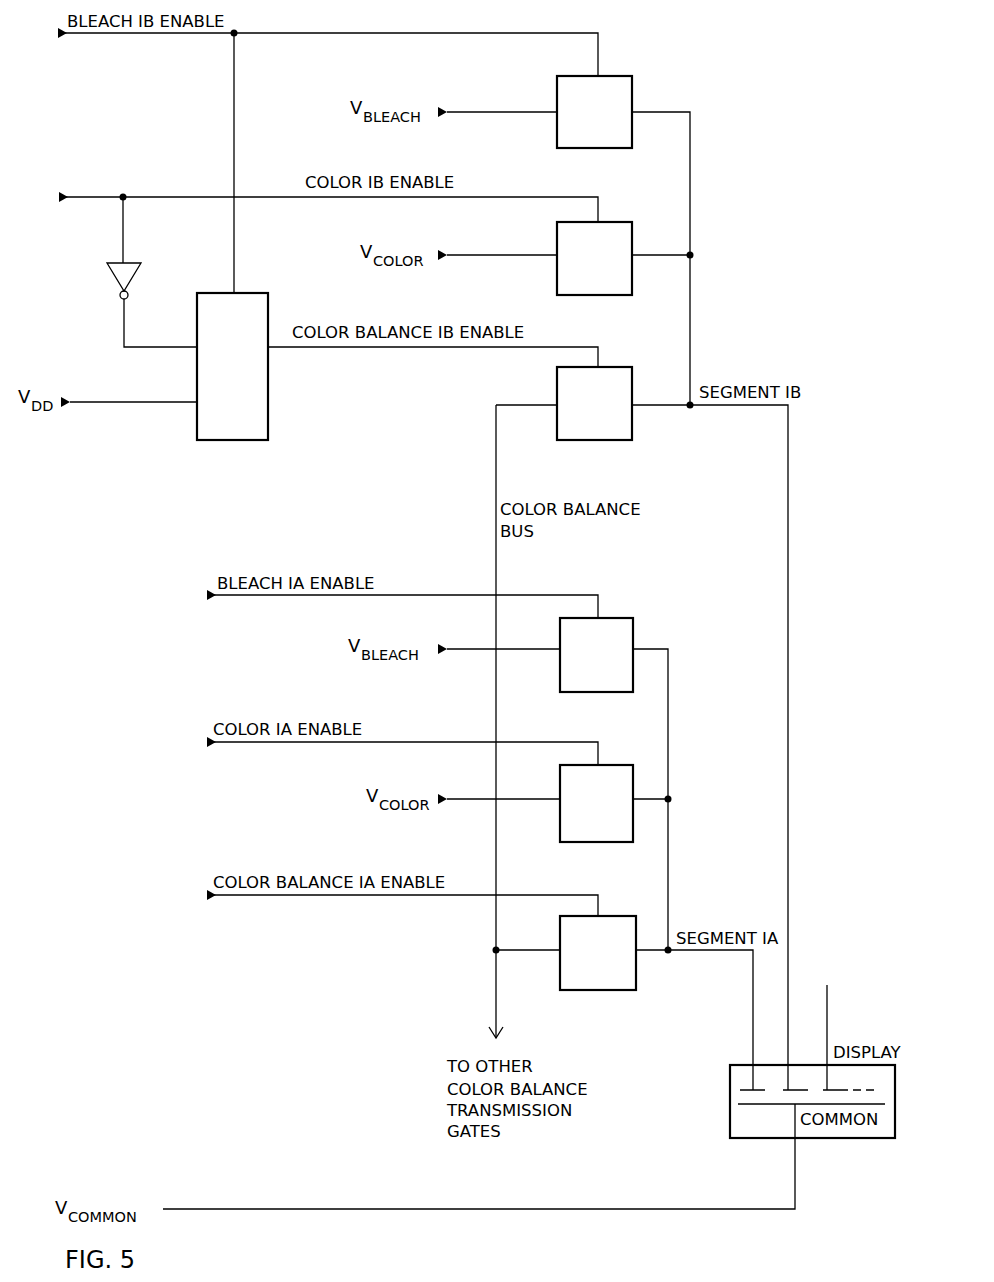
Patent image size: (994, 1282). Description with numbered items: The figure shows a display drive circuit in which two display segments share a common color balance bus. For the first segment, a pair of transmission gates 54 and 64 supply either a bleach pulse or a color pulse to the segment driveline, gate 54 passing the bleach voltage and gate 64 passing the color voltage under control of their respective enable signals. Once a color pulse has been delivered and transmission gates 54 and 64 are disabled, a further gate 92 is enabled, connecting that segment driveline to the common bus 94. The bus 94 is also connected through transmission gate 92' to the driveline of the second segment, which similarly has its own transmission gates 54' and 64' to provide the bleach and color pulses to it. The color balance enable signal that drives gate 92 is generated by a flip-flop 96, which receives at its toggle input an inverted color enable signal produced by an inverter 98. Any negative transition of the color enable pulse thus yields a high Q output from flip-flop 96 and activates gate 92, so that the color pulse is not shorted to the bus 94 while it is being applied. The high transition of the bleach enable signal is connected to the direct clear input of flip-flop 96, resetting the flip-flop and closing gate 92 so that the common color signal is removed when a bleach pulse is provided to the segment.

The transmission gate 54 is at (571, 115).
The transmission gate 64 is at (570, 258).
The gate 92 is at (599, 383).
The common bus 94 is at (496, 572).
The flip-flop 96 is at (218, 440).
The inverter 98 is at (110, 277).
The transmission gate 54' is at (603, 673).
The transmission gate 64' is at (603, 819).
The transmission gate 92' is at (603, 970).